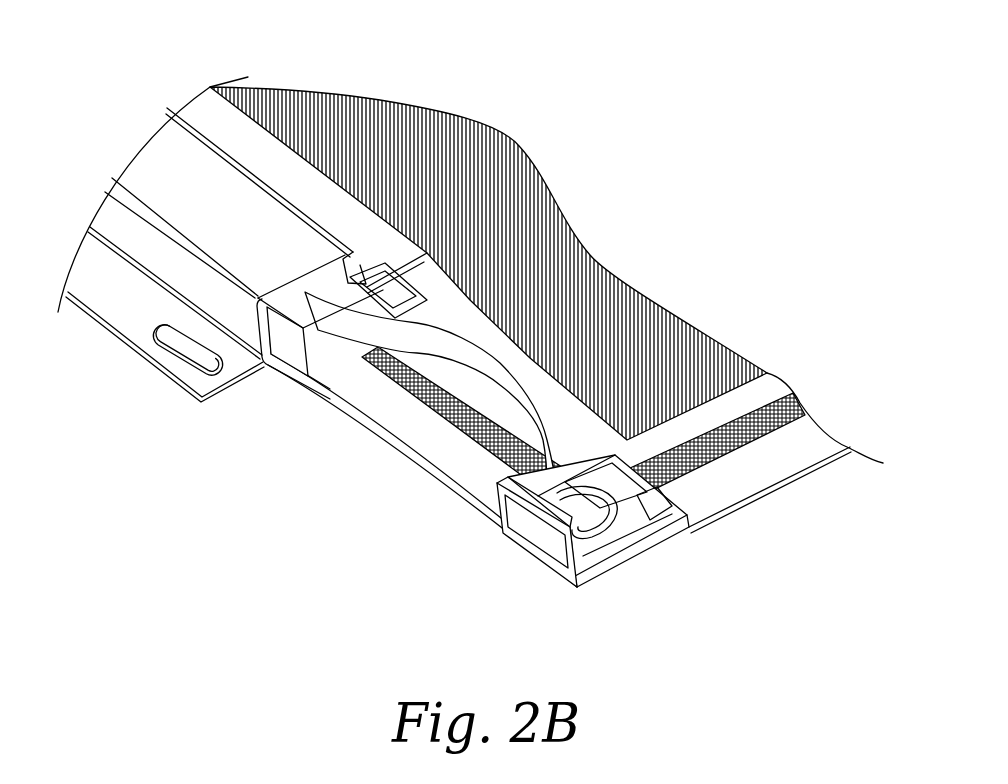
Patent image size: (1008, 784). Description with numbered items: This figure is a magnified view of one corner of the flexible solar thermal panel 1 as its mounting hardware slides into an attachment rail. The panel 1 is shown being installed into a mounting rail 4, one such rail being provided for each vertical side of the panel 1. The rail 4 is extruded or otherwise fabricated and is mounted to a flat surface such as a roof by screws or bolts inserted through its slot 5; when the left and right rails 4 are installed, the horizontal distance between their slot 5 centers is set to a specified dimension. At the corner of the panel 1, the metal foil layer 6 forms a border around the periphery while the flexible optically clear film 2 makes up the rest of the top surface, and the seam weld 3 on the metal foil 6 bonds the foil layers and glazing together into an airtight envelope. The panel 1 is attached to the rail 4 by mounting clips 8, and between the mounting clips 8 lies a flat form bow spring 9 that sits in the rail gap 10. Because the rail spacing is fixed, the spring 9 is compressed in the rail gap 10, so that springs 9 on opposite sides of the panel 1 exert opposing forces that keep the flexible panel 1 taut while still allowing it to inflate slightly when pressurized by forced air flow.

The solar thermal panel 1 is at (418, 103).
The flexible optically clear film 2 is at (483, 168).
The seam weld 3 is at (720, 455).
The mounting rail 4 is at (132, 305).
The slot 5 is at (187, 348).
The metal foil layer 6 is at (710, 485).
The mounting clip 8 is at (530, 533).
The flat form bow spring 9 is at (437, 341).
The rail gap 10 is at (303, 293).